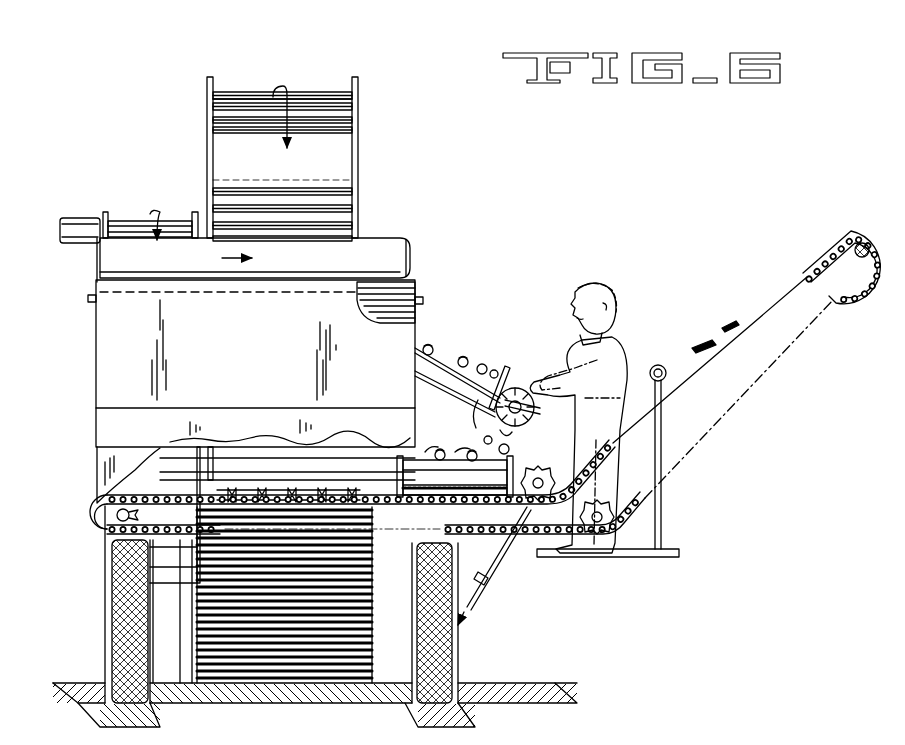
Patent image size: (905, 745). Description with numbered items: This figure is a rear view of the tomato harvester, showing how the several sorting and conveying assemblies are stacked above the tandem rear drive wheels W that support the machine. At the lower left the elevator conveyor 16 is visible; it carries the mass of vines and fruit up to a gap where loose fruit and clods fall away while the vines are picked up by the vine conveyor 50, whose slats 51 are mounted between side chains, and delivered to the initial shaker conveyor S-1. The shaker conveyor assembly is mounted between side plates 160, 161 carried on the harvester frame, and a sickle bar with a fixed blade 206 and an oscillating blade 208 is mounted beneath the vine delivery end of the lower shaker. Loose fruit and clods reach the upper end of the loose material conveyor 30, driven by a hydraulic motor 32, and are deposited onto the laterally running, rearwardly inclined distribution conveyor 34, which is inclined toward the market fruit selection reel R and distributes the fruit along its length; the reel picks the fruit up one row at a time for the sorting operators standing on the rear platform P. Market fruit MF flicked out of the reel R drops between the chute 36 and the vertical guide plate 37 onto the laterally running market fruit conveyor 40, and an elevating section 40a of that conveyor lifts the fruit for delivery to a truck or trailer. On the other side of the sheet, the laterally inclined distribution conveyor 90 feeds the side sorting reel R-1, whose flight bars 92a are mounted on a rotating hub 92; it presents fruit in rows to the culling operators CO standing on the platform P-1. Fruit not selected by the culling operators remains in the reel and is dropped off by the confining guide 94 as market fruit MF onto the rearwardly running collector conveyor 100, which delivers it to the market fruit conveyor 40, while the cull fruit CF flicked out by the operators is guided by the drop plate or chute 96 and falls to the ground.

The vine conveyor 50 is at (297, 92).
The side plate 161 is at (207, 99).
The slats 51 is at (352, 120).
The side plate 160 is at (358, 138).
The initial shaker conveyor S-1 is at (355, 182).
The hydraulic motor 32 is at (90, 218).
The loose material conveyor 30 is at (172, 212).
The distribution conveyor 34 is at (406, 244).
The market fruit selection reel R is at (418, 278).
The vertical guide plate 37 is at (244, 334).
The chute 36 is at (238, 420).
The rear platform P is at (97, 452).
The market fruit conveyor 40 is at (142, 493).
The oscillating blade 208 is at (233, 495).
The fixed blade 206 is at (283, 492).
The collector conveyor 100 is at (417, 462).
The distribution conveyor 90 is at (410, 361).
The side sorting reel R-1 is at (523, 385).
The rotating hub 92 is at (494, 418).
The flight bars 92a is at (486, 402).
The market fruit MF is at (486, 452).
The confining guide 94 is at (548, 438).
The drop plate or chute 96 is at (503, 558).
The cull fruit CF is at (488, 580).
The elevating section of market fruit conveyor 40a is at (805, 277).
The culling operators CO is at (620, 290).
The platform P-1 is at (679, 553).
The elevator conveyor 16 is at (372, 542).
The tandem rear drive wheels W is at (112, 603).